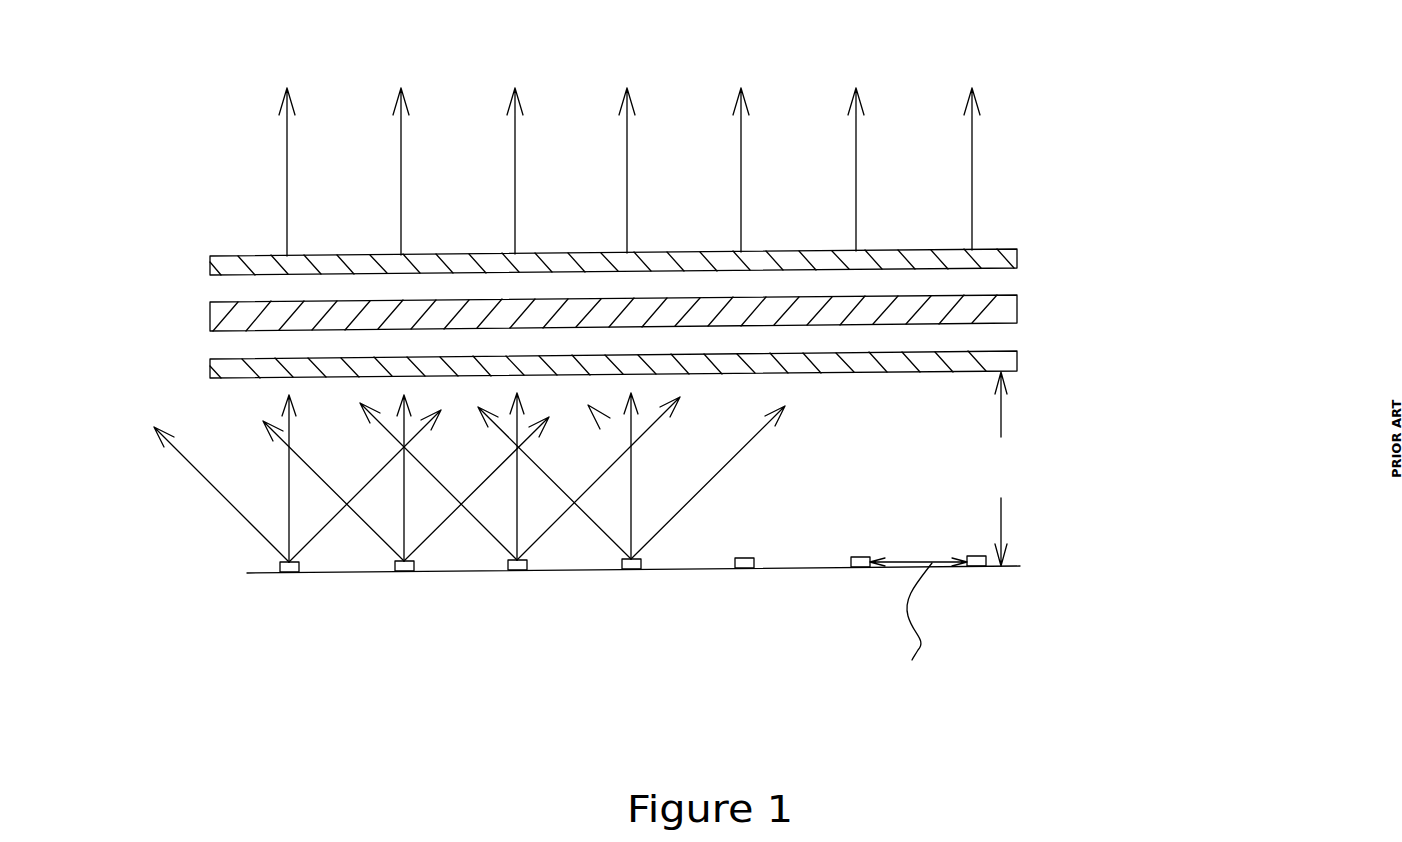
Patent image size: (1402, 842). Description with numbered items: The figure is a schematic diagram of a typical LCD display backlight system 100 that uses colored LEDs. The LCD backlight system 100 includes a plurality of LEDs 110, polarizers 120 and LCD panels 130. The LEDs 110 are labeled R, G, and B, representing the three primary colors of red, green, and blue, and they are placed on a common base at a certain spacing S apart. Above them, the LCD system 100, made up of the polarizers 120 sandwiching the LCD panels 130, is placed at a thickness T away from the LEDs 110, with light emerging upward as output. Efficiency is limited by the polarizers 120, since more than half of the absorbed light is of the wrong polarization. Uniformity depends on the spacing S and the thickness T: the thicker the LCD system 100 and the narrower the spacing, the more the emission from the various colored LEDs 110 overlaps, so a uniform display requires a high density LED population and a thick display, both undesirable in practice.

The LCD backlight system 100 is at (233, 640).
The LEDs 110 is at (587, 519).
The polarizers 120 is at (1016, 254).
The LCD panels 130 is at (1016, 304).